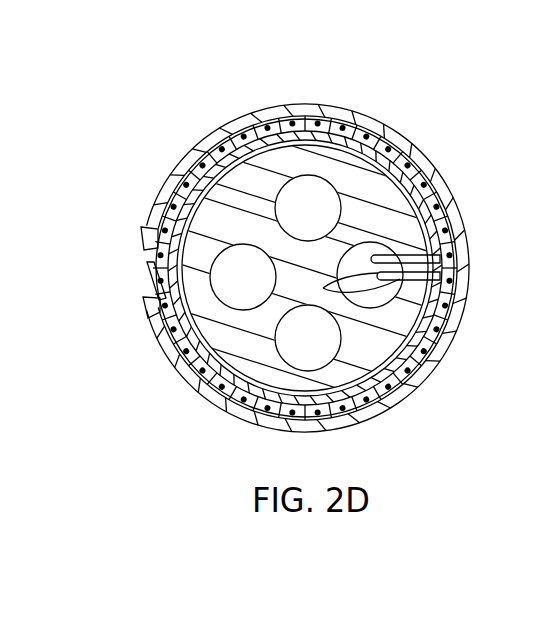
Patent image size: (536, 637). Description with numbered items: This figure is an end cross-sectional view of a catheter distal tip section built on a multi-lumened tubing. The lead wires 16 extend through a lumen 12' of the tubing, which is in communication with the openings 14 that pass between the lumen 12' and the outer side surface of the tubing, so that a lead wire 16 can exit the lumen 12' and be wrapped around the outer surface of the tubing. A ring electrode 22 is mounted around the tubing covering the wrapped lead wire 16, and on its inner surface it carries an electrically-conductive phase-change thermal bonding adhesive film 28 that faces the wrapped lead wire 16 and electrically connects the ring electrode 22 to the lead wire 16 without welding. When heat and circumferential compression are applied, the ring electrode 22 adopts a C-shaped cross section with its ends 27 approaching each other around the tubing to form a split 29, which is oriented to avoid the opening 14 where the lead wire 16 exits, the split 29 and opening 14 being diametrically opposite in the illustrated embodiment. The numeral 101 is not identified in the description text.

The lumen 12' is at (411, 223).
The exit hole 14 is at (427, 251).
The electrode lead wire 16 is at (268, 138).
The ring electrode 22 is at (212, 150).
The ends 27 is at (73, 300).
The thermal bonding adhesive film 28 is at (327, 125).
The split 29 is at (250, 268).
The cable core 101 is at (410, 328).